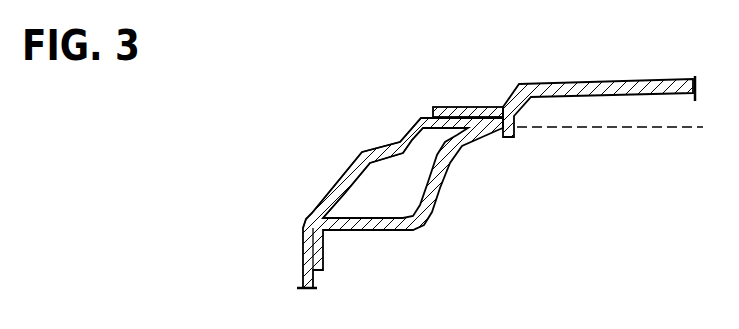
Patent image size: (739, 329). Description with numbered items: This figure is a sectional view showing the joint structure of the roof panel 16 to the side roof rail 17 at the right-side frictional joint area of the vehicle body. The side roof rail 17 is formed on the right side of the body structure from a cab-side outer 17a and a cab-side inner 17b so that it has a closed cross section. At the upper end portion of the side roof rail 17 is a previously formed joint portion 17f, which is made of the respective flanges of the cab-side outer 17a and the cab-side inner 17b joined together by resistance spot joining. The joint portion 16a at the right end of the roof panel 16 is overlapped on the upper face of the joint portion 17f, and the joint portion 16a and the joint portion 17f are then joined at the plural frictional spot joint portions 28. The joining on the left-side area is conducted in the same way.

The roof panel 16 is at (633, 83).
The joint portion 16a is at (445, 105).
The frictional spot joint portions 28 is at (482, 106).
The side roof rail 17 is at (456, 232).
The cab-side outer 17a is at (332, 183).
The cab-side inner 17b is at (377, 232).
The joint portion 17f is at (482, 137).